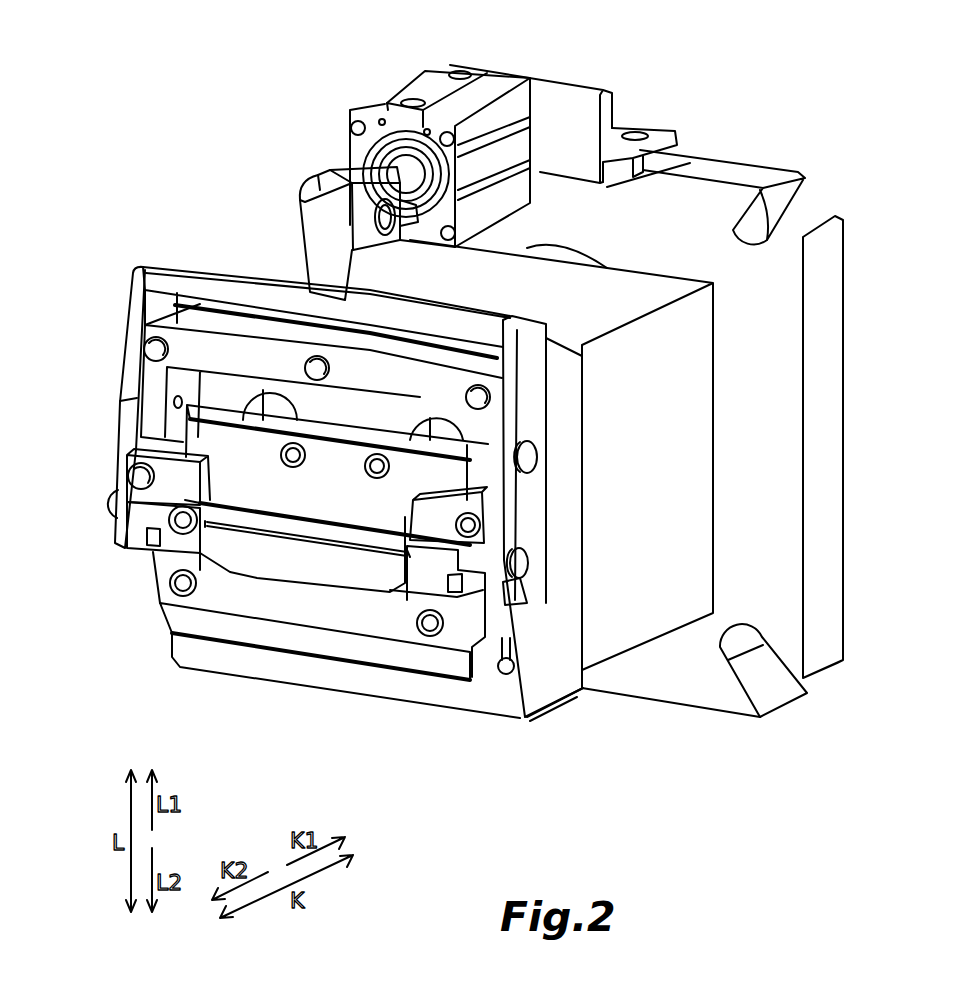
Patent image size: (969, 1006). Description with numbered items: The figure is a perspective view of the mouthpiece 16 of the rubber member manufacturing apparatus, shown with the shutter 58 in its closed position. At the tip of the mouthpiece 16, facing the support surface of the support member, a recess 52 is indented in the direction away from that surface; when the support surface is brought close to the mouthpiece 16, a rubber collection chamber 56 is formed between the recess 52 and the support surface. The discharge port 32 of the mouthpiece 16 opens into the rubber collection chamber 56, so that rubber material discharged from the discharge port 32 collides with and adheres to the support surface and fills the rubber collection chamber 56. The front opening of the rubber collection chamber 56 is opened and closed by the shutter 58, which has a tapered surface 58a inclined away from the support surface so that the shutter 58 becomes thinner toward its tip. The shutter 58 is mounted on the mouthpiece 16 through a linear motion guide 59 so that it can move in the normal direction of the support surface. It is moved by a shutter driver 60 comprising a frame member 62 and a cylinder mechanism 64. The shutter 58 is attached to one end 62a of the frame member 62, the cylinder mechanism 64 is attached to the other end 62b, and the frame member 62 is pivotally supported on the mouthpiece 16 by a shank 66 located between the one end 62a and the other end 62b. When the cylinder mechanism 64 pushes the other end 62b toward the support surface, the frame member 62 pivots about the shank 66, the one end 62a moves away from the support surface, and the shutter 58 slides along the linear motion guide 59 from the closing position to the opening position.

The mouthpiece 16 is at (575, 702).
The cylinder mechanism 64 is at (380, 105).
The shutter driver 60 is at (285, 192).
The frame member 62 is at (128, 355).
The other end of the frame member 62b is at (185, 287).
The one end of the frame member 62a is at (118, 532).
The shank 66 is at (133, 400).
The shutter 58 is at (428, 533).
The tapered surface 58a is at (313, 502).
The linear motion guide 59 is at (148, 540).
The discharge port 32 is at (263, 542).
The rubber collection chamber 56 is at (303, 575).
The recess 52 is at (367, 580).